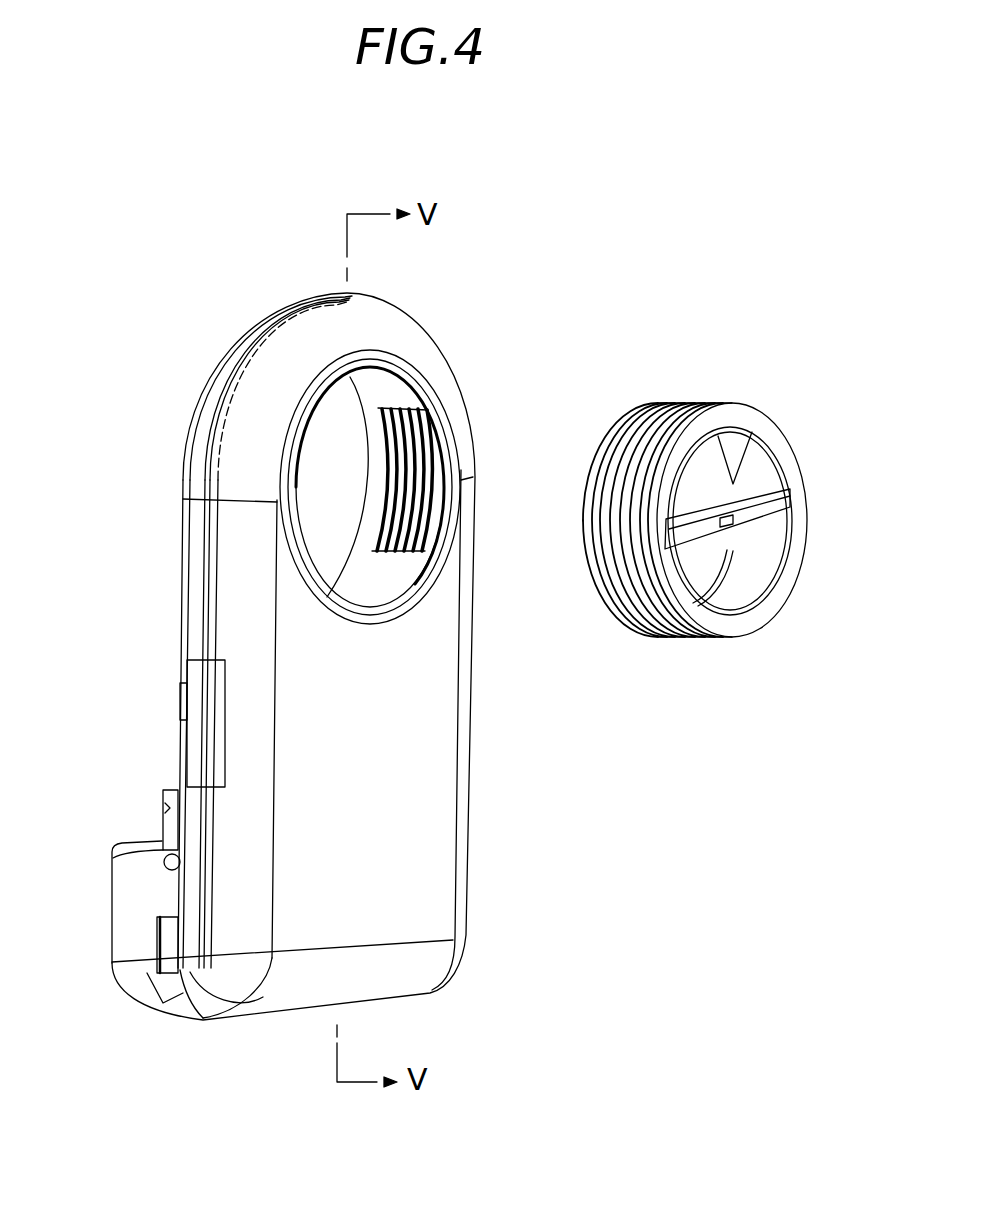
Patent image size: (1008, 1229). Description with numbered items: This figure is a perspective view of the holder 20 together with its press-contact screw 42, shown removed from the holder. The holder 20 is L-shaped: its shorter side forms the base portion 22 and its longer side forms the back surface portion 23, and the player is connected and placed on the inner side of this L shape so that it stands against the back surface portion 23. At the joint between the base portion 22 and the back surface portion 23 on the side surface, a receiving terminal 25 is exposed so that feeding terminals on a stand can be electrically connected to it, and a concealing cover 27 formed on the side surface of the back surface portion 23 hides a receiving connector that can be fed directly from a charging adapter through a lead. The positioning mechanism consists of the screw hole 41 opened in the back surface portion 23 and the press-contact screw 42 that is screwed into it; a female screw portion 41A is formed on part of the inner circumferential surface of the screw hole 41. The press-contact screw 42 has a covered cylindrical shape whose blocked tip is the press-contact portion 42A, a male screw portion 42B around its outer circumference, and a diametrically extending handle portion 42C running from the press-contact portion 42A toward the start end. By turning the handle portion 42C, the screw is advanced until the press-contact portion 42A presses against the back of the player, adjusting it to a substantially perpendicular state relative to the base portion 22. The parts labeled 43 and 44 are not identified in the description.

The holder 20 is at (286, 625).
The base portion 22 is at (128, 930).
The back surface portion 23 is at (427, 737).
The receiving terminal 25 is at (163, 864).
The concealing cover 27 is at (197, 735).
The screw hole 41 is at (388, 385).
The female screw portion 41A is at (423, 490).
The press-contact screw 42 is at (704, 518).
The press-contact portion 42A is at (582, 513).
The male screw portion 42B is at (673, 402).
The handle portion 42C is at (747, 500).
The flange 43 is at (768, 529).
The inner rim 44 is at (760, 592).